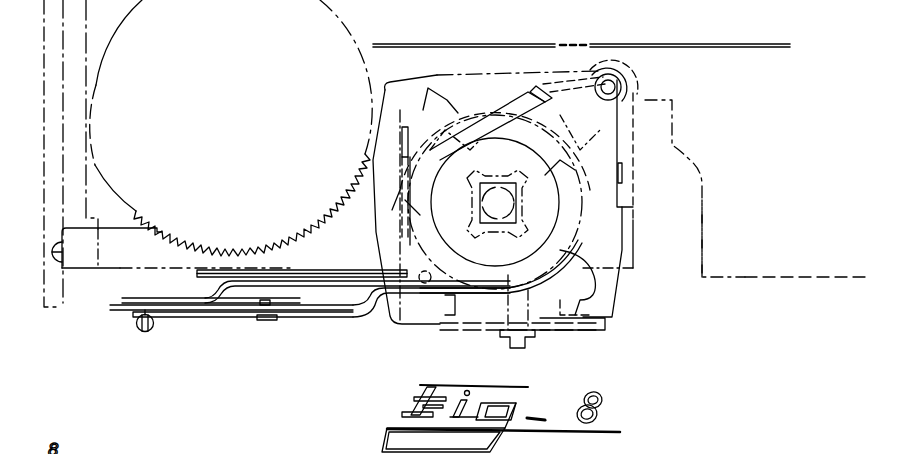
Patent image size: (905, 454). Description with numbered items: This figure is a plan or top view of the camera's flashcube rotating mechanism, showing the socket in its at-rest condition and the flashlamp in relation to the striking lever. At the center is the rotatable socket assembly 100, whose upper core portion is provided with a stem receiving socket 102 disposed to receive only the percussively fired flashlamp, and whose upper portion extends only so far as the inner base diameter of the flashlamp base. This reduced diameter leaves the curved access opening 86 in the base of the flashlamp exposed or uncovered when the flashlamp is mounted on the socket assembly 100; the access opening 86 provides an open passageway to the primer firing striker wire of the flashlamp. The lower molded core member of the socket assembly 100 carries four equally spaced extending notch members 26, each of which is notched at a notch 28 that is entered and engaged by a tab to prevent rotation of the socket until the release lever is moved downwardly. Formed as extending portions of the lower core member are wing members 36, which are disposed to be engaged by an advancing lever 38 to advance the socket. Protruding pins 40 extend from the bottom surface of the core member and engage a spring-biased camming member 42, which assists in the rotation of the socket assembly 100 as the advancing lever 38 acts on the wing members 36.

The notch member 26 is at (560, 305).
The notch 28 is at (617, 321).
The wing member 36 is at (380, 126).
The advancing lever 38 is at (397, 221).
The pin 40 is at (543, 150).
The camming member 42 is at (494, 64).
The access opening 86 is at (455, 300).
The socket assembly 100 is at (697, 246).
The stem receiving socket 102 is at (527, 212).